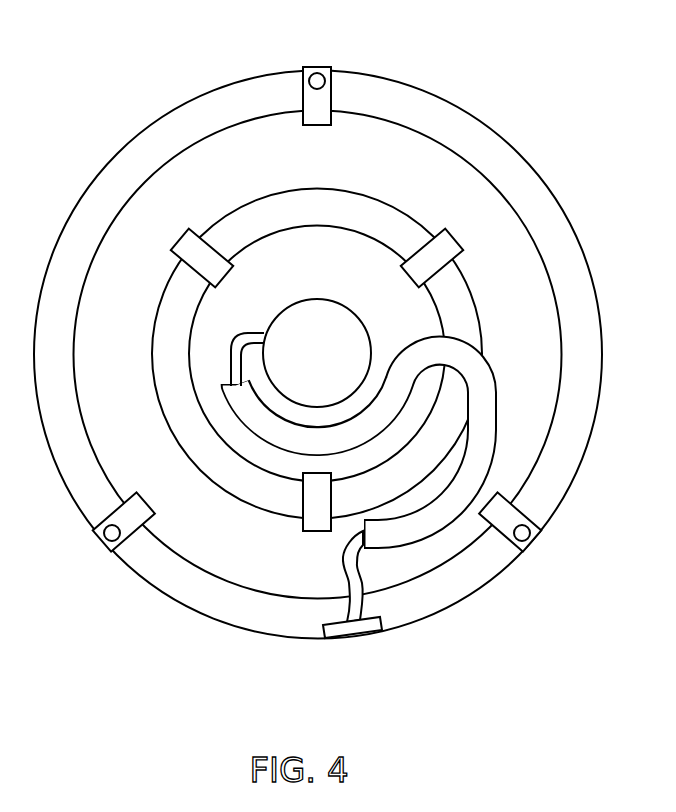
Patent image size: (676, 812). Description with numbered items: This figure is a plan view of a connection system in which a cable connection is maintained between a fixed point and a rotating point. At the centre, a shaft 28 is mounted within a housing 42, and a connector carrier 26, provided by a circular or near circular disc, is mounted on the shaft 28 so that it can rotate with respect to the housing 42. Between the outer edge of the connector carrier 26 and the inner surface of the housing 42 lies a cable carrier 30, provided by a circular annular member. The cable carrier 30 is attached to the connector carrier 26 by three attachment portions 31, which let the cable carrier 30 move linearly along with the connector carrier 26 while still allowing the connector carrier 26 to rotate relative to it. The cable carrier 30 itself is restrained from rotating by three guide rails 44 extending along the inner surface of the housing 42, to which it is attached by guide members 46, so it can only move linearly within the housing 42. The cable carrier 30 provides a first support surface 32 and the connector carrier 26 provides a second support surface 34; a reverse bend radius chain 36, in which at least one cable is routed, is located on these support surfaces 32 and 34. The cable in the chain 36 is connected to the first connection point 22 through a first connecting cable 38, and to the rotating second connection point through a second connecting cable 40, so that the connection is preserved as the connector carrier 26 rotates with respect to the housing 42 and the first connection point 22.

The first connection point 22 is at (362, 630).
The connector carrier 26 is at (200, 340).
The shaft 28 is at (301, 364).
The cable carrier 30 is at (521, 230).
The attachment portions 31 is at (185, 245).
The first support surface 32 is at (253, 173).
The second support surface 34 is at (300, 273).
The reverse bend radius chain 36 is at (486, 392).
The first connecting cable 38 is at (337, 612).
The second connecting cable 40 is at (250, 333).
The housing 42 is at (468, 106).
The guide rails 44 is at (316, 73).
The guide members 46 is at (334, 100).